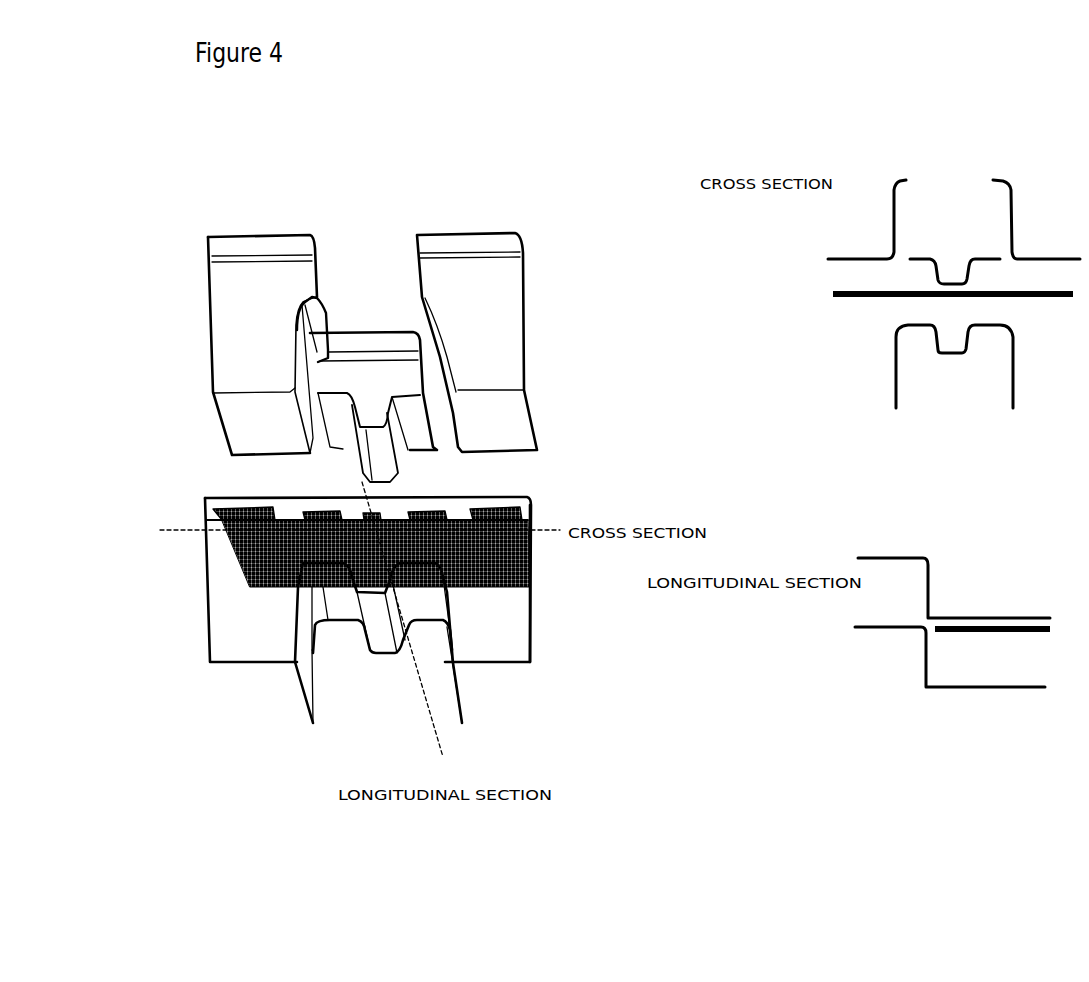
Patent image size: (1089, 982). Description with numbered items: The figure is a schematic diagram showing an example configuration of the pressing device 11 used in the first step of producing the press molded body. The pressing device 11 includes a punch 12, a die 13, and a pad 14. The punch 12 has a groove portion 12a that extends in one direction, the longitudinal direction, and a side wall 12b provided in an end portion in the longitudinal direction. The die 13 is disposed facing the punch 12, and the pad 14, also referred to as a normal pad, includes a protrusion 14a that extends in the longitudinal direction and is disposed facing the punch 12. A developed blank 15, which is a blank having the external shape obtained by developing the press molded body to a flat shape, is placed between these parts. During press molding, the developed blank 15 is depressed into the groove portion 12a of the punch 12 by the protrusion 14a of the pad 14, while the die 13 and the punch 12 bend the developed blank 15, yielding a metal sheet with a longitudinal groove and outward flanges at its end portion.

The pressing device 11 is at (556, 249).
The punch 12 is at (492, 696).
The groove portion 12a is at (377, 627).
The side wall 12b is at (520, 622).
The die 13 is at (523, 320).
The pad 14 is at (372, 328).
The protrusion 14a is at (398, 468).
The developed blank 15 is at (523, 550).